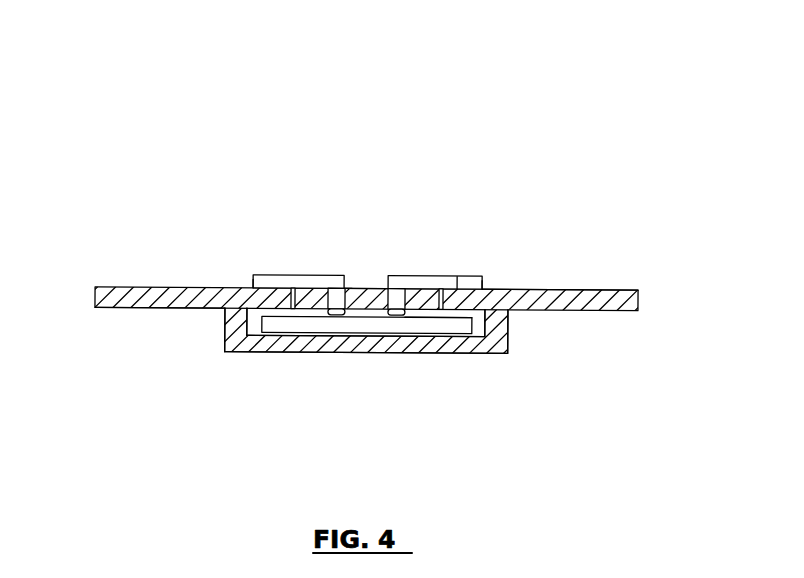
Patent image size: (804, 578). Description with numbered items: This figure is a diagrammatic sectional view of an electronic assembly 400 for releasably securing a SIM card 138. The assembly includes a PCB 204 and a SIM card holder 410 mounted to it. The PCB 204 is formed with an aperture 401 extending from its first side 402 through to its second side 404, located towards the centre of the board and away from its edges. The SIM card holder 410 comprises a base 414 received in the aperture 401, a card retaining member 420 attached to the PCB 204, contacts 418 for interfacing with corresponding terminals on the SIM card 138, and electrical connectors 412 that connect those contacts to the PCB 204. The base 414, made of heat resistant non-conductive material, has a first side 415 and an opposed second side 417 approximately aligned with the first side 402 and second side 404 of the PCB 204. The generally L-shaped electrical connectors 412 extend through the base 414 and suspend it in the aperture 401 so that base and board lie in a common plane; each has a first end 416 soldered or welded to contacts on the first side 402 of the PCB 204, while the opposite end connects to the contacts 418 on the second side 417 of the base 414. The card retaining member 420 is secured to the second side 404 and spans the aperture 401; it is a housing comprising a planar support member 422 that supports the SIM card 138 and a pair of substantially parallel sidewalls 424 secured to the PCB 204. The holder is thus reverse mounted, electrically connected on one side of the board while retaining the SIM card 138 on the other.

The SIM card holder 410 is at (547, 99).
The electronic assembly 400 is at (666, 304).
The first side 402 is at (137, 287).
The second side 404 is at (127, 308).
The PCB 204 is at (605, 288).
The electrical connectors 412 is at (293, 280).
The base 414 is at (370, 287).
The first side 415 is at (348, 288).
The first end 416 is at (253, 286).
The aperture 401 is at (457, 288).
The second side 417 is at (427, 313).
The contacts 418 is at (336, 315).
The SIM card 138 is at (283, 325).
The card retaining member 420 is at (503, 356).
The support member 422 is at (308, 352).
The sidewalls 424 is at (223, 330).